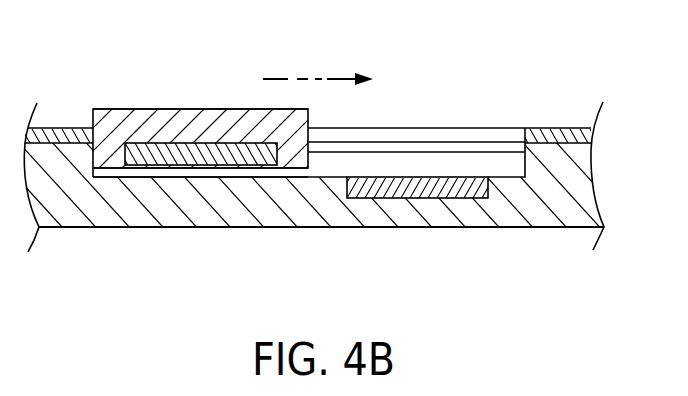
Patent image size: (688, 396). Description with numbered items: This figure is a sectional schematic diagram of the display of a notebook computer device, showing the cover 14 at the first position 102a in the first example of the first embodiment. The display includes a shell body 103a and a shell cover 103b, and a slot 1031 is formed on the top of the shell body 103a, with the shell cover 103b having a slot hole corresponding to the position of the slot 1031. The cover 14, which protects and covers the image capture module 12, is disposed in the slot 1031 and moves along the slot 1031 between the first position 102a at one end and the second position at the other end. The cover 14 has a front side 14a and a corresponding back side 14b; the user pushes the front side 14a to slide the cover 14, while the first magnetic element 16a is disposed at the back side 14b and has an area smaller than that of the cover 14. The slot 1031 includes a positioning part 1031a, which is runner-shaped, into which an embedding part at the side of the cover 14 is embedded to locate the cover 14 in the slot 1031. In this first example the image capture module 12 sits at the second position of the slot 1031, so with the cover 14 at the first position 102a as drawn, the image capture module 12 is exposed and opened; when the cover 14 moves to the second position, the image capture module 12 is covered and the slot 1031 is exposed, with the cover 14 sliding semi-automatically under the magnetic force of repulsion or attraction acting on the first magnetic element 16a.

The image capture module 12 is at (397, 188).
The cover 14 is at (163, 122).
The front side 14a is at (215, 110).
The back side 14b is at (291, 168).
The first magnetic element 16a is at (195, 153).
The first position 102a is at (117, 178).
The shell body 103a is at (70, 213).
The shell cover 103b is at (47, 137).
The slot 1031 is at (505, 162).
The positioning part 1031a is at (437, 148).